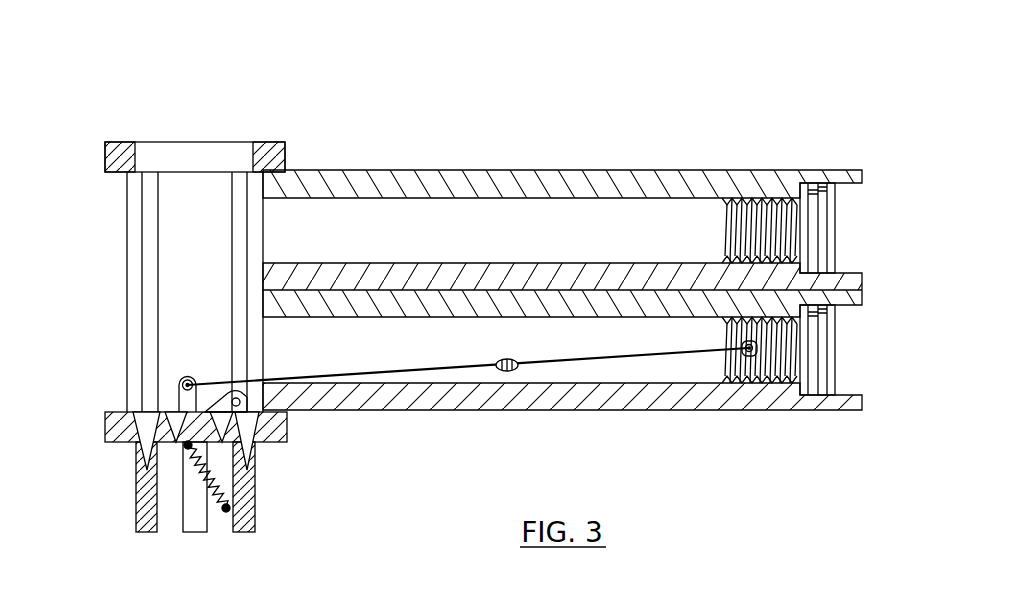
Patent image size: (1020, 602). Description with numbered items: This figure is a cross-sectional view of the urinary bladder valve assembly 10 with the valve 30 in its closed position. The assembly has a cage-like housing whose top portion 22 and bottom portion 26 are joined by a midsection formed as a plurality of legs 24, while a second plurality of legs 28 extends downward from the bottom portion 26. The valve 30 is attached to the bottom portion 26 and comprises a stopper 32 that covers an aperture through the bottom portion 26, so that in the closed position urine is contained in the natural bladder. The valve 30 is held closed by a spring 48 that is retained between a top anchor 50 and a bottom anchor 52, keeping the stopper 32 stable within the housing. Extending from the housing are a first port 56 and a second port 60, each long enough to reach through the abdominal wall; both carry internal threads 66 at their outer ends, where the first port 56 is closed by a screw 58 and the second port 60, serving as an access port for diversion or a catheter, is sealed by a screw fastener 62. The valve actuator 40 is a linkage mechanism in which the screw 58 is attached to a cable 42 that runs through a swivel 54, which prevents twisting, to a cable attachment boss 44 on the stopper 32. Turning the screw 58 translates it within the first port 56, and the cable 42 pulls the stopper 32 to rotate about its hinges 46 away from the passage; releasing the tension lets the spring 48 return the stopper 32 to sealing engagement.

The urinary bladder valve assembly 10 is at (369, 135).
The top portion 22 is at (105, 156).
The legs 24 is at (126, 222).
The bottom portion 26 is at (153, 472).
The second plurality of legs 28 is at (136, 496).
The valve 30 is at (178, 348).
The stopper 32 is at (176, 412).
The valve actuator 40 is at (591, 318).
The cable 42 is at (577, 360).
The cable attachment boss 44 is at (178, 380).
The hinges 46 is at (230, 392).
The spring 48 is at (203, 478).
The top anchor 50 is at (186, 449).
The bottom anchor 52 is at (226, 512).
The swivel 54 is at (507, 371).
The first port 56 is at (424, 411).
The screw 58 is at (836, 372).
The second port 60 is at (510, 169).
The screw fastener 62 is at (836, 197).
The internal threads 66 is at (744, 212).